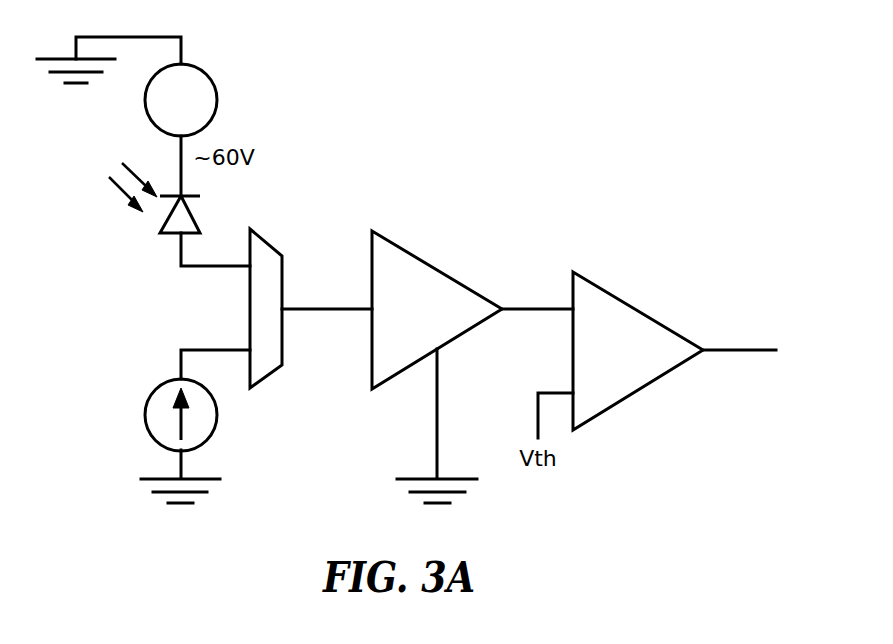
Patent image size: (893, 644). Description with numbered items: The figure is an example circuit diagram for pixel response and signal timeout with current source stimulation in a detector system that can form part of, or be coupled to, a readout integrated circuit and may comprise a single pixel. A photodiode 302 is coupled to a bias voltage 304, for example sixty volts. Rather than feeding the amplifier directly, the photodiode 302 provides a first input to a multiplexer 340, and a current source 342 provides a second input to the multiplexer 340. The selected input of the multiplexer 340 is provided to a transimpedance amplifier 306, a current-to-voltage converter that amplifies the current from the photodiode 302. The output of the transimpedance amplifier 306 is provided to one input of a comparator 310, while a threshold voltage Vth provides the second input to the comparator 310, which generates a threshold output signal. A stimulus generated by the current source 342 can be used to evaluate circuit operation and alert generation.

The photodiode 302 is at (167, 235).
The bias voltage 304 is at (217, 100).
The transimpedance amplifier 306 is at (386, 337).
The comparator 310 is at (601, 364).
The multiplexer 340 is at (267, 242).
The current source 342 is at (145, 415).